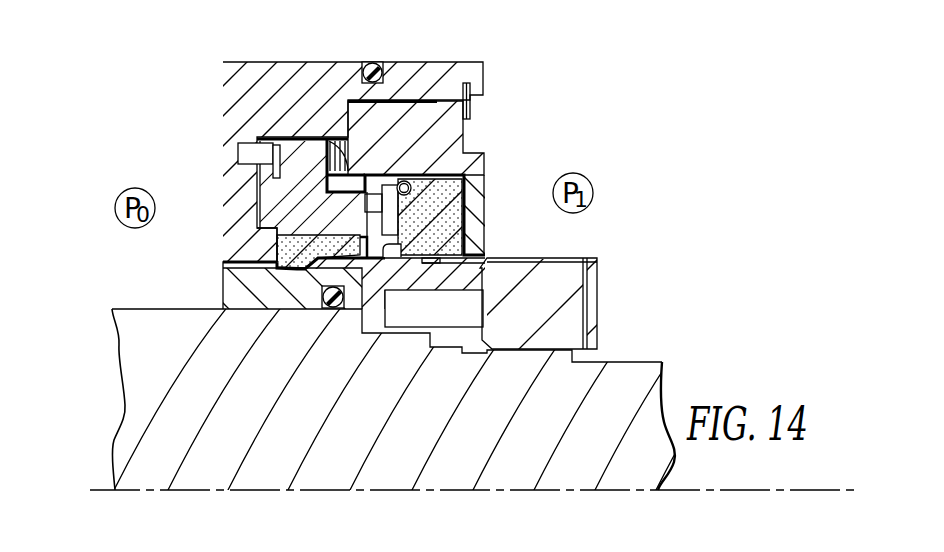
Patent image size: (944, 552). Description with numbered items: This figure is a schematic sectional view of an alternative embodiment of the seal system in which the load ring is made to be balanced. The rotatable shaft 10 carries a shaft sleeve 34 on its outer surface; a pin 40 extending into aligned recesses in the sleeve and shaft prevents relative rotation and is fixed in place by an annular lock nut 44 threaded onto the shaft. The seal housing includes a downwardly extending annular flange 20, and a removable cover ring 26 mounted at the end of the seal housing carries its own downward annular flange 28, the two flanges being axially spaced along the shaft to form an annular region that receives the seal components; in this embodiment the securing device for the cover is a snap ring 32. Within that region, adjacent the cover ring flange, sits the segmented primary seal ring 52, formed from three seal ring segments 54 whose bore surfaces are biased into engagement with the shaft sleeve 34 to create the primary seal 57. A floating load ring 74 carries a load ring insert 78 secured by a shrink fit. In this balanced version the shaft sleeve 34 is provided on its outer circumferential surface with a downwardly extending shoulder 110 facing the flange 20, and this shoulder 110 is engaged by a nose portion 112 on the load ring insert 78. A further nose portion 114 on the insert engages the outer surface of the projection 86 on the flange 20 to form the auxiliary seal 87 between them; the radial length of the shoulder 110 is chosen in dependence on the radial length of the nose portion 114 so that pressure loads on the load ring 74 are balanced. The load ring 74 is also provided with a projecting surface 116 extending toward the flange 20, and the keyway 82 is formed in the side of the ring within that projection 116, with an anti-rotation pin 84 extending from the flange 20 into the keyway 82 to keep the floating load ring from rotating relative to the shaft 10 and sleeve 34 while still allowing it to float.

The rotatable shaft 10 is at (612, 458).
The annular flange 20 is at (223, 190).
The cover ring 26 is at (450, 130).
The annular flange 28 is at (476, 213).
The snap ring 32 is at (470, 108).
The shaft sleeve 34 is at (468, 278).
The pin 40 is at (411, 318).
The lock nut 44 is at (585, 300).
The segmented primary seal ring 52 is at (447, 175).
The seal ring segment 54 is at (466, 191).
The primary seal 57 is at (408, 262).
The load ring 74 is at (298, 150).
The load ring insert 78 is at (300, 228).
The keyway 82 is at (281, 175).
The anti-rotation pin 84 is at (240, 152).
The projection 86 is at (268, 236).
The auxiliary seal 87 is at (224, 262).
The shoulder 110 is at (334, 261).
The nose portion 112 is at (337, 276).
The nose portion 114 is at (274, 252).
The projecting surface 116 is at (263, 194).